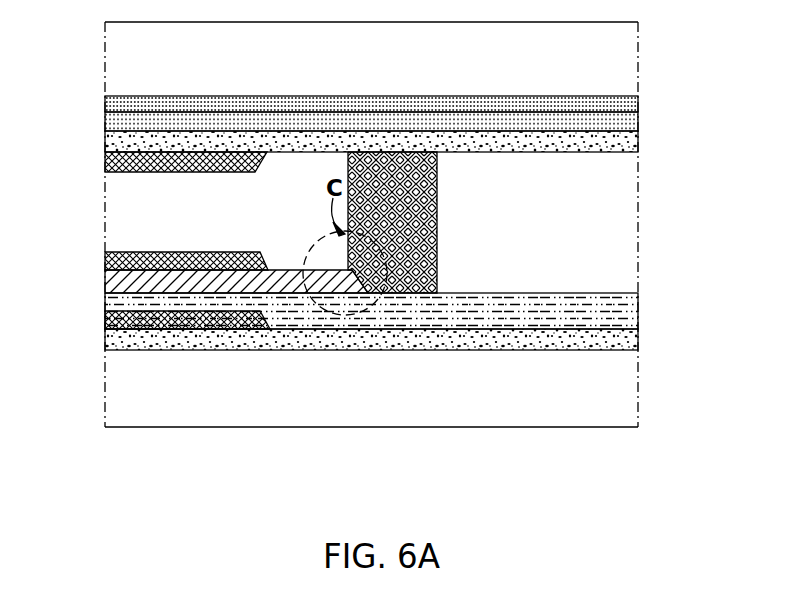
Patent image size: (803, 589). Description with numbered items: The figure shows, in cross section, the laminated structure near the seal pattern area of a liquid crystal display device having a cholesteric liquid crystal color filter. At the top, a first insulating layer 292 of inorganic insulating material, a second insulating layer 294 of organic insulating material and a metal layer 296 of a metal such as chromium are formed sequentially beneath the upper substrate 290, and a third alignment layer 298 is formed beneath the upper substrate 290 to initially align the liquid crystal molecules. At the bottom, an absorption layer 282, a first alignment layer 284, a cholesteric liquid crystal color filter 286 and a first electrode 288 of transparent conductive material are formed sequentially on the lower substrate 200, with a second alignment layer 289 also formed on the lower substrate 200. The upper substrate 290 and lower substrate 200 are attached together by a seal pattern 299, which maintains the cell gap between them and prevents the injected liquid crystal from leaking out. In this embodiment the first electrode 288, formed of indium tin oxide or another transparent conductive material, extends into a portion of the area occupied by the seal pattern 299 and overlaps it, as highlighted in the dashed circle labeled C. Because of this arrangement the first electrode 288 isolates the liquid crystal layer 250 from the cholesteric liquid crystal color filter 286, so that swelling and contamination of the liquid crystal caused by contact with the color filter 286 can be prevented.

The lower substrate 200 is at (628, 393).
The absorption layer 282 is at (633, 343).
The first alignment layer 284 is at (105, 318).
The cholesteric liquid crystal (CLC) color filter 286 is at (630, 312).
The first electrode 288 is at (105, 280).
The second alignment layer 289 is at (105, 253).
The upper substrate 290 is at (623, 60).
The first insulating layer 292 is at (633, 108).
The second insulating layer 294 is at (633, 130).
The metal layer 296 is at (633, 150).
The third alignment layer 298 is at (105, 158).
The seal pattern 299 is at (437, 207).
The liquid crystal layer 250 is at (627, 212).